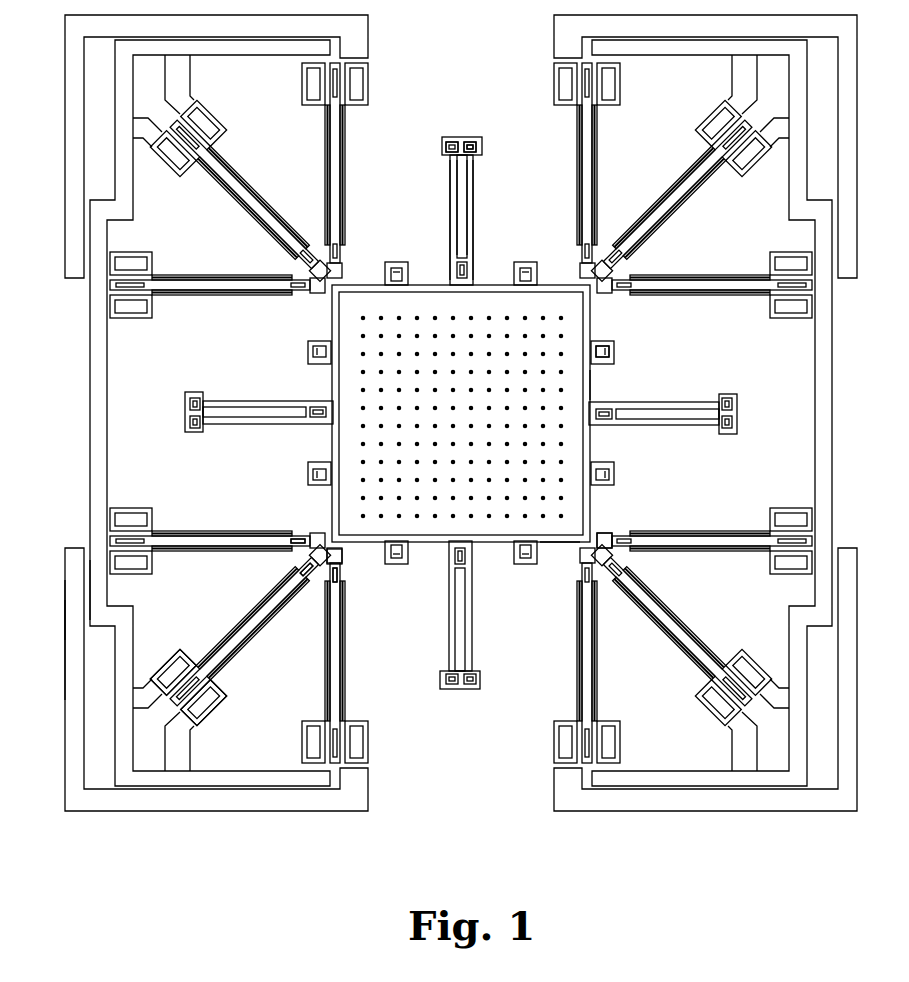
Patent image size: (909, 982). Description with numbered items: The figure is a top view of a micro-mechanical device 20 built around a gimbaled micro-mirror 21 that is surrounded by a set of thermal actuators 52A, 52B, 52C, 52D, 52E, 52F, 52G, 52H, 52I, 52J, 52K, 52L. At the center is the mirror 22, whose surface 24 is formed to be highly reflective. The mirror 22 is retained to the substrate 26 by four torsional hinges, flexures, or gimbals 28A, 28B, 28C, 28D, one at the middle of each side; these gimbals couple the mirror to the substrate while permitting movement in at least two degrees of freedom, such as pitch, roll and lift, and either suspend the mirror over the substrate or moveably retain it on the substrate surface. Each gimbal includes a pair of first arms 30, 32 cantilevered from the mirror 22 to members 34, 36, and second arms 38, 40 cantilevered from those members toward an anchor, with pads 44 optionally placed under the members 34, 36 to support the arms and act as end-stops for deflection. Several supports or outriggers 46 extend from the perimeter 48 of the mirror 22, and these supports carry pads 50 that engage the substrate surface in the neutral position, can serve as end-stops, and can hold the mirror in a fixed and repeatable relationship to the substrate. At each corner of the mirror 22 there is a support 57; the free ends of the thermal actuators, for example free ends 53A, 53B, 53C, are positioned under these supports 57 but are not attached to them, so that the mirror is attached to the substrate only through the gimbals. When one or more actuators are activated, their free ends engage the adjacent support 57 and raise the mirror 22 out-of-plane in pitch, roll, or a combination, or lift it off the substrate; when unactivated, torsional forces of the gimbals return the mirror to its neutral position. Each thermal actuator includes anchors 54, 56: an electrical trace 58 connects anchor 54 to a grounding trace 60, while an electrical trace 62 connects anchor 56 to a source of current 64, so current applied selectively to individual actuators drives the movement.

The micro-mechanical device 20 is at (66, 638).
The gimbaled micro-mirror 21 is at (560, 547).
The mirror 22 is at (340, 432).
The surface 24 is at (347, 318).
The substrate 26 is at (624, 826).
The gimbal 28A is at (436, 143).
The gimbal 28B is at (745, 418).
The gimbal 28C is at (462, 696).
The gimbal 28D is at (184, 426).
The first arm 30 is at (474, 239).
The first arm 32 is at (450, 216).
The member 34 is at (469, 141).
The member 36 is at (452, 141).
The second arm 38 is at (466, 178).
The second arm 40 is at (456, 190).
The pad 44 is at (477, 152).
The support 46 is at (617, 350).
The perimeter 48 is at (593, 385).
The pad 50 is at (605, 337).
The thermal actuator 52A is at (350, 658).
The thermal actuator 52B is at (289, 614).
The thermal actuator 52C is at (212, 527).
The thermal actuator 52D is at (232, 299).
The thermal actuator 52E is at (255, 220).
The thermal actuator 52F is at (322, 181).
The thermal actuator 52G is at (601, 180).
The thermal actuator 52H is at (692, 200).
The thermal actuator 52I is at (740, 300).
The thermal actuator 52J is at (702, 527).
The thermal actuator 52K is at (710, 640).
The thermal actuator 52L is at (578, 670).
The free end 53A is at (342, 578).
The free end 53B is at (298, 563).
The free end 53C is at (305, 533).
The anchor 54 is at (206, 704).
The anchor 56 is at (175, 665).
The support 57 is at (341, 559).
The electrical trace 58 is at (192, 756).
The grounding trace 60 is at (163, 809).
The electrical trace 62 is at (100, 703).
The source of current 64 is at (72, 598).